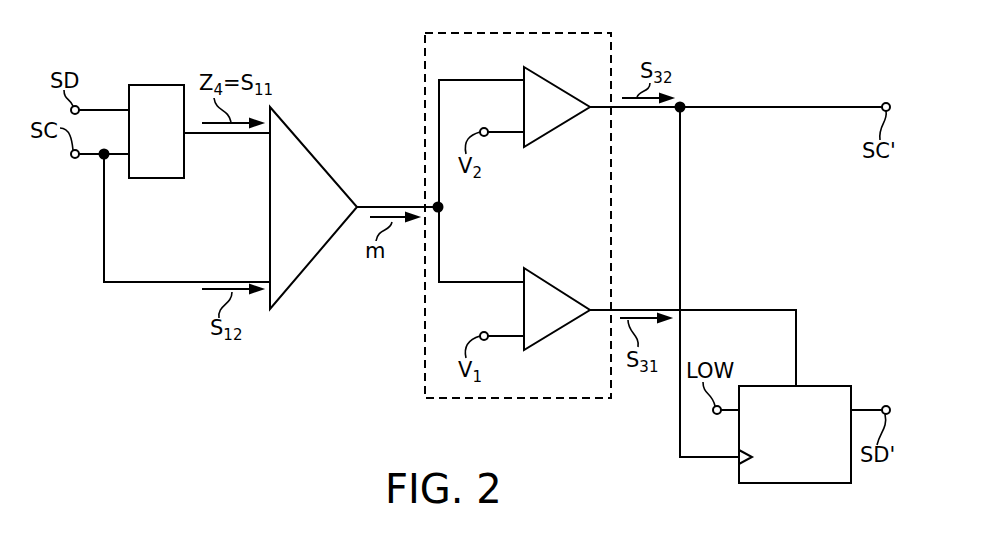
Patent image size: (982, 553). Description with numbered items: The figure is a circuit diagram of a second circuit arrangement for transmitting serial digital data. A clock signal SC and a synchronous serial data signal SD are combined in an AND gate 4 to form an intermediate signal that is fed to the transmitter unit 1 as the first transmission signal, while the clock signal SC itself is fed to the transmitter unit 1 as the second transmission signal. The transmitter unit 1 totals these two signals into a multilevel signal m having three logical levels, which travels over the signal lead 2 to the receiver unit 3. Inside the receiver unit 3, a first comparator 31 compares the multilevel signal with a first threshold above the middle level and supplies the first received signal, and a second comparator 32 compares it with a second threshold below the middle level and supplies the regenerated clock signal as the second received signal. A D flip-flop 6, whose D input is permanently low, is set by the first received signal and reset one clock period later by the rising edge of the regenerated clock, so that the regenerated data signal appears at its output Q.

The transmitter unit 1 is at (307, 145).
The signal lead 2 is at (375, 206).
The receiver unit 3 is at (425, 370).
The AND gate 4 is at (148, 85).
The D flip-flop 6 is at (830, 386).
The first comparator 31 is at (565, 327).
The second comparator 32 is at (565, 123).